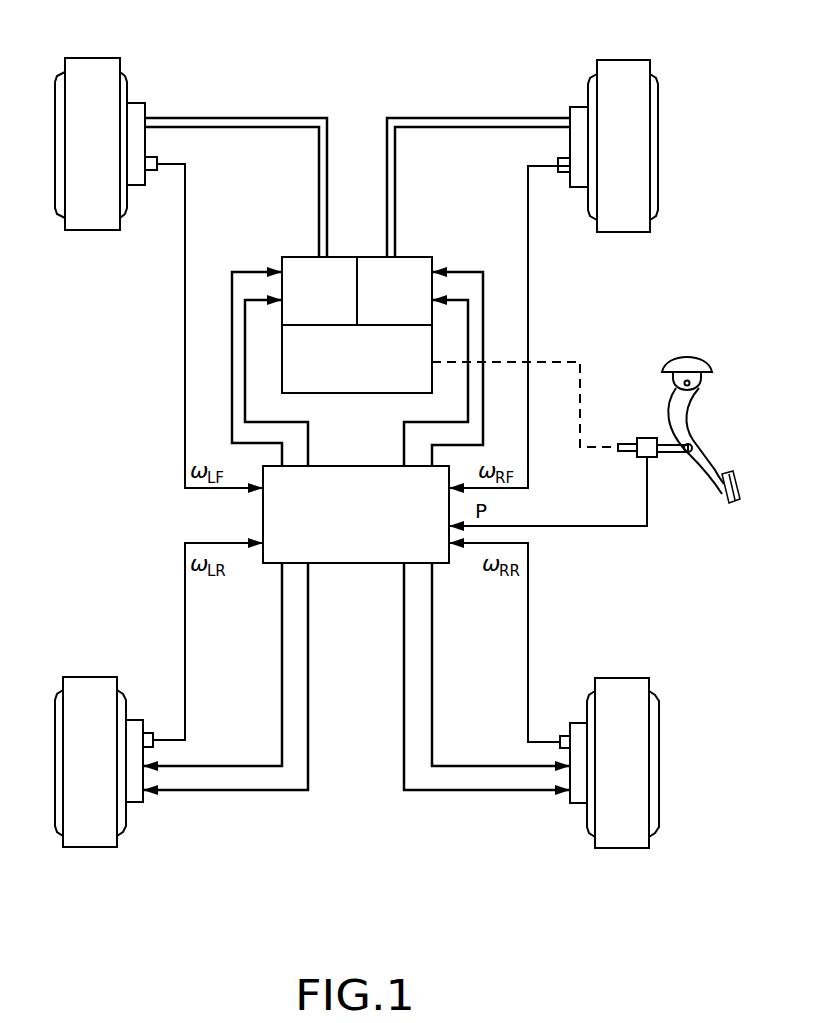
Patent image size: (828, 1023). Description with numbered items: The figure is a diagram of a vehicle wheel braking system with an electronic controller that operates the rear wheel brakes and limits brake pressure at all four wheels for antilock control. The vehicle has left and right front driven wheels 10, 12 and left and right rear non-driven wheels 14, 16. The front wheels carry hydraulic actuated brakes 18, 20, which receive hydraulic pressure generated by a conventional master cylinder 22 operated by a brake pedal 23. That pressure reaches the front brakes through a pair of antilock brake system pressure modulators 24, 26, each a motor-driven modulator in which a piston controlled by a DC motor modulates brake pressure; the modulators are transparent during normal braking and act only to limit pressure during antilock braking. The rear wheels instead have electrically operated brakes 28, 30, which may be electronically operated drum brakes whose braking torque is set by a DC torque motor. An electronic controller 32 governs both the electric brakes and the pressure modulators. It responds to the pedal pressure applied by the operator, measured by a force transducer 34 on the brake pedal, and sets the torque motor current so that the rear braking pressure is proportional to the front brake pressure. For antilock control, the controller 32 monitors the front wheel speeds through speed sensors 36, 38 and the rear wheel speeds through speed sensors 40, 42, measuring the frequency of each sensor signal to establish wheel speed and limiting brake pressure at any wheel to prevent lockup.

The left front driven wheel 10 is at (84, 58).
The right front driven wheel 12 is at (612, 68).
The left rear non-driven wheel 14 is at (110, 688).
The right rear non-driven wheel 16 is at (620, 702).
The hydraulic actuated brake 18 is at (135, 145).
The hydraulic actuated brake 20 is at (572, 145).
The master cylinder 22 is at (385, 397).
The brake pedal 23 is at (705, 465).
The antilock brake system pressure modulator 24 is at (340, 256).
The antilock brake system pressure modulator 26 is at (415, 256).
The electrically operated brake 28 is at (137, 788).
The electrically operated brake 30 is at (575, 802).
The electronic controller 32 is at (370, 568).
The force transducer 34 is at (647, 440).
The speed sensor 36 is at (155, 170).
The speed sensor 38 is at (558, 175).
The speed sensor 40 is at (153, 733).
The speed sensor 42 is at (563, 737).